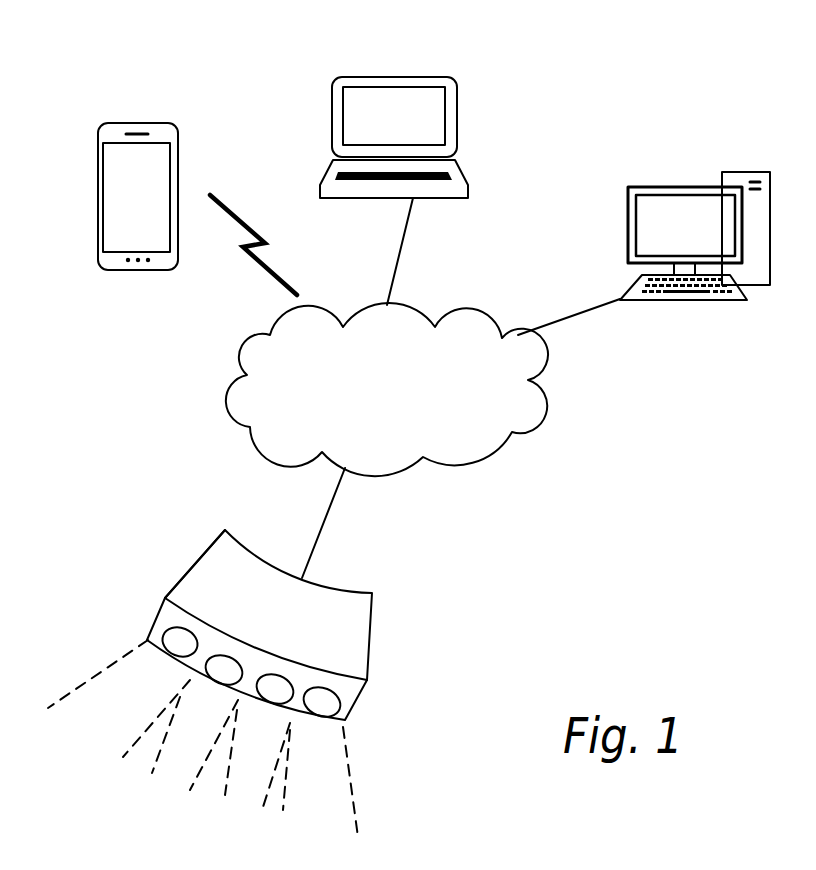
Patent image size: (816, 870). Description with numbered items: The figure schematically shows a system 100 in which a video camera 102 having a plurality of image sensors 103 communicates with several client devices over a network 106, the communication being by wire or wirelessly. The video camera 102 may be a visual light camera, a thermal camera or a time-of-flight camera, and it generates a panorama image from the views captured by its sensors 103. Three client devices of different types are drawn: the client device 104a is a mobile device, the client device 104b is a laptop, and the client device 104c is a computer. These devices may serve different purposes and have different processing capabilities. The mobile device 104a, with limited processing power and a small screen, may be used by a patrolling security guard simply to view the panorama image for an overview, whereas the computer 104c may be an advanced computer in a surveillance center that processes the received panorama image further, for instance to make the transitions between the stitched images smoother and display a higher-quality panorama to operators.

The system 100 is at (664, 70).
The video camera 102 is at (370, 630).
The image sensors 103 is at (323, 702).
The mobile device 104a is at (138, 122).
The laptop 104b is at (372, 82).
The computer 104c is at (702, 197).
The network 106 is at (524, 431).